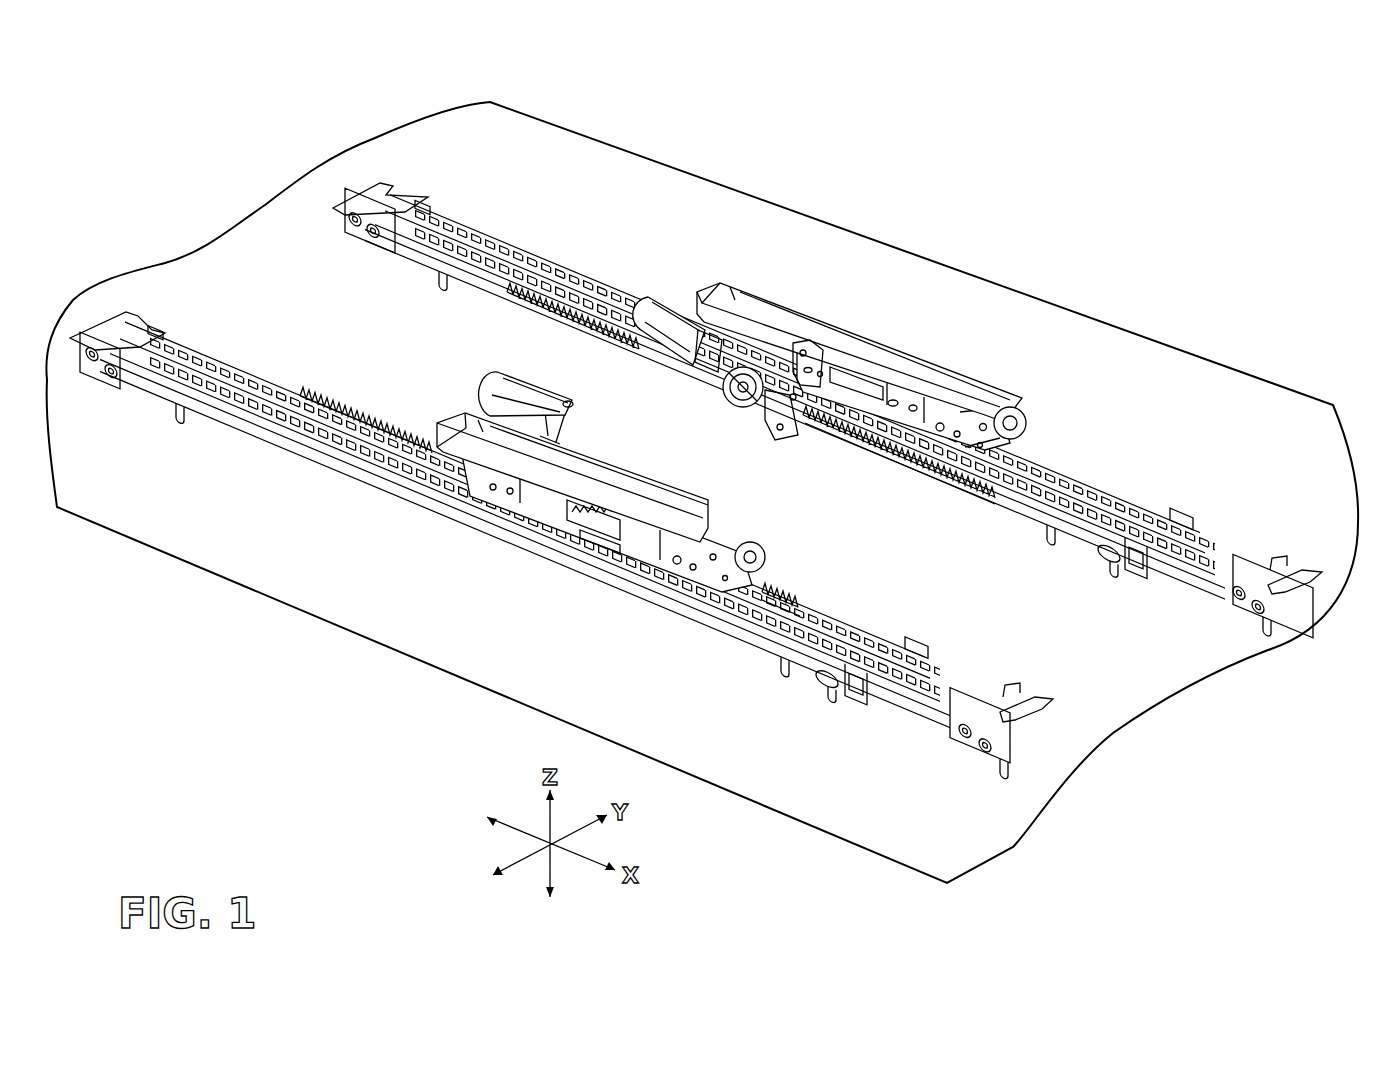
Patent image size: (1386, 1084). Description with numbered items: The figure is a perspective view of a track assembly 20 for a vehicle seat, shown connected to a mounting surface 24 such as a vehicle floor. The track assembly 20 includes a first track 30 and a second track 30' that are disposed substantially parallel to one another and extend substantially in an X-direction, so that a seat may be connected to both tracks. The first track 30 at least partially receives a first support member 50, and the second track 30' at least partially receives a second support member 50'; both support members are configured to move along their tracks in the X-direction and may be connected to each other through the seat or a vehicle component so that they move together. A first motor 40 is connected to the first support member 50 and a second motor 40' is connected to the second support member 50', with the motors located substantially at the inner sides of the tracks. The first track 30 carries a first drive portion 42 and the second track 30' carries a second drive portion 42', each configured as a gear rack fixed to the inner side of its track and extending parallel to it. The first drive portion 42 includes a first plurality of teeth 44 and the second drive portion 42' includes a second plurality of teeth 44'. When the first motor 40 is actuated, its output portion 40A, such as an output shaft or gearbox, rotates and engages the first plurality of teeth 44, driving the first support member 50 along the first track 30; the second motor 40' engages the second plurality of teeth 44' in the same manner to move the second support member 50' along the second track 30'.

The track assembly 20 is at (200, 163).
The mounting surface 24 is at (793, 208).
The first track 30 is at (827, 412).
The second track 30' is at (561, 551).
The first motor 40 is at (672, 282).
The second motor 40' is at (532, 391).
The output portion 40A is at (722, 417).
The first drive portion 42 is at (751, 413).
The second drive portion 42' is at (591, 497).
The first plurality of teeth 44 is at (900, 475).
The second plurality of teeth 44' is at (795, 569).
The first support member 50 is at (892, 342).
The second support member 50' is at (542, 502).